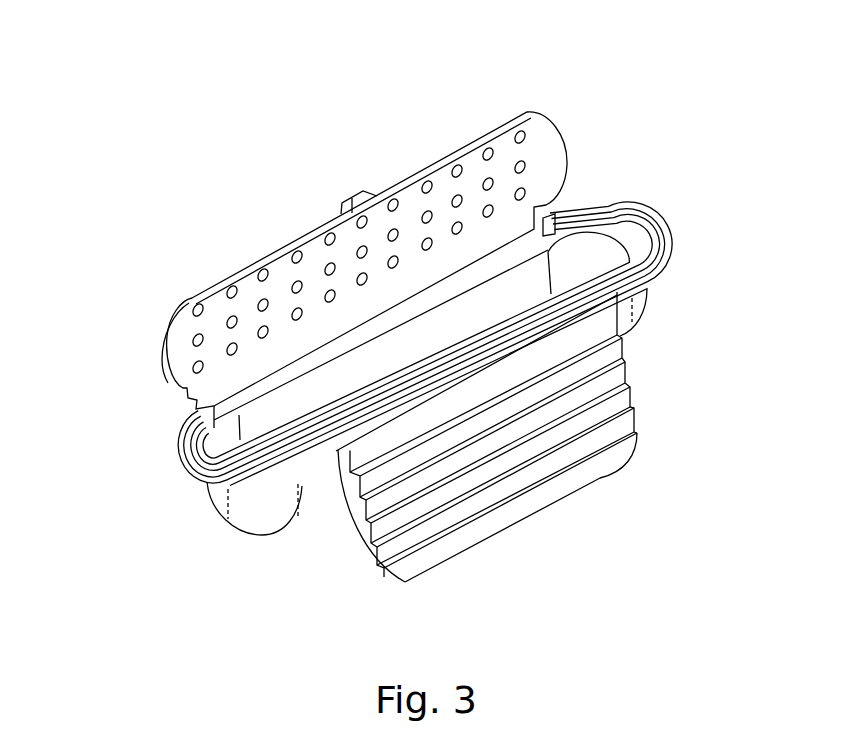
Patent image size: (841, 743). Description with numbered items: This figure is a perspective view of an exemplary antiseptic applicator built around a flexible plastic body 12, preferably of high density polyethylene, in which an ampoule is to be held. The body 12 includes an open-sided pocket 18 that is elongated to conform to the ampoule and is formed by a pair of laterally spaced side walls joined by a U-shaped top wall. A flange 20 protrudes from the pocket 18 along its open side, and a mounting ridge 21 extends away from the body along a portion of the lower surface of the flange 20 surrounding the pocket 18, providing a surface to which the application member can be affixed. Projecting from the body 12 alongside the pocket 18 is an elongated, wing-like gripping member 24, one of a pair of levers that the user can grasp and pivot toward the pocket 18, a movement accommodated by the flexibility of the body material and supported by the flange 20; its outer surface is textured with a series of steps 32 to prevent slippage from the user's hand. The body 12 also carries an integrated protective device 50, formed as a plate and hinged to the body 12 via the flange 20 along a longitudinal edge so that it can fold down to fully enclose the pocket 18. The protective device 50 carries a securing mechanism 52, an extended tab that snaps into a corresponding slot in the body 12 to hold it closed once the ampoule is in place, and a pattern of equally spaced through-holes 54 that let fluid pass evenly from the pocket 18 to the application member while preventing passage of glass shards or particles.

The body 12 is at (415, 392).
The open-sided pocket 18 is at (577, 257).
The flange 20 is at (193, 464).
The mounting ridge 21 is at (268, 445).
The gripping member 24 is at (632, 413).
The steps 32 is at (520, 460).
The protective device 50 is at (422, 214).
The securing mechanism 52 is at (352, 196).
The through-holes 54 is at (478, 153).